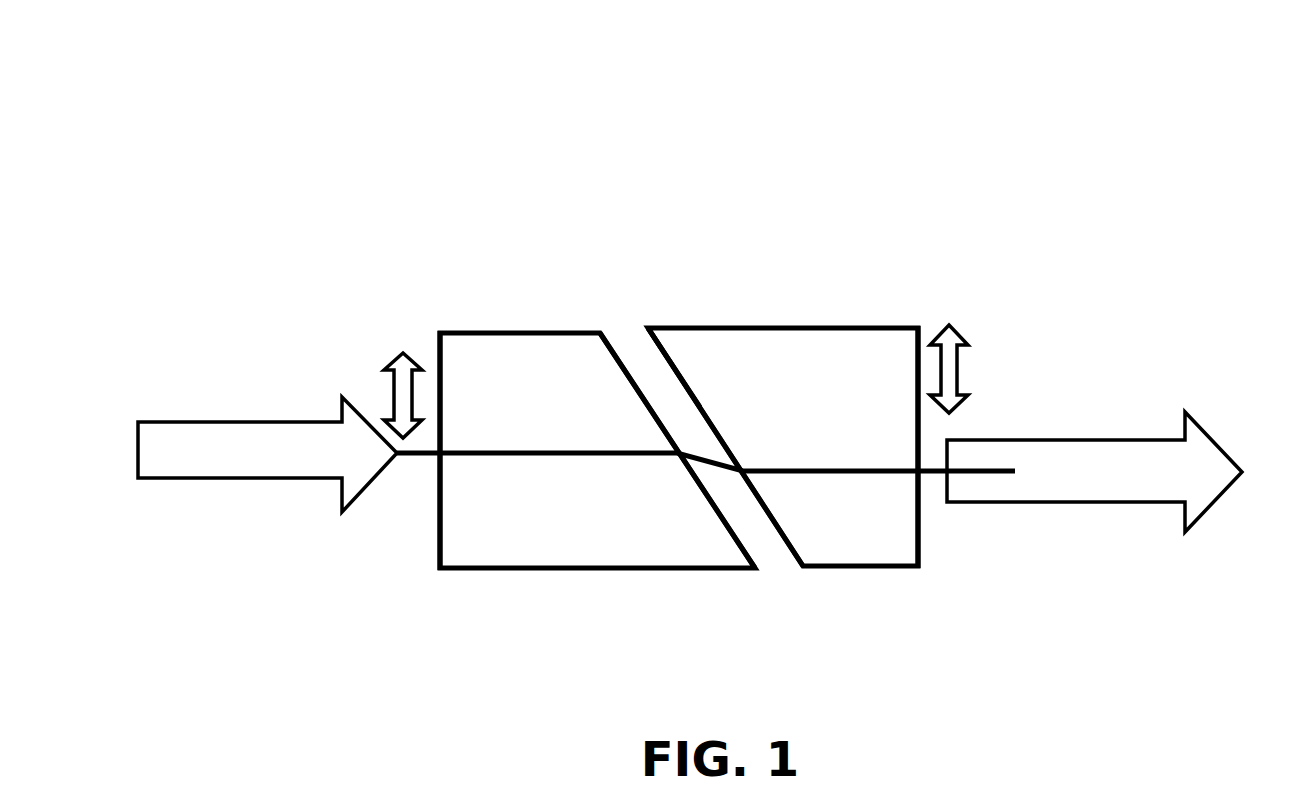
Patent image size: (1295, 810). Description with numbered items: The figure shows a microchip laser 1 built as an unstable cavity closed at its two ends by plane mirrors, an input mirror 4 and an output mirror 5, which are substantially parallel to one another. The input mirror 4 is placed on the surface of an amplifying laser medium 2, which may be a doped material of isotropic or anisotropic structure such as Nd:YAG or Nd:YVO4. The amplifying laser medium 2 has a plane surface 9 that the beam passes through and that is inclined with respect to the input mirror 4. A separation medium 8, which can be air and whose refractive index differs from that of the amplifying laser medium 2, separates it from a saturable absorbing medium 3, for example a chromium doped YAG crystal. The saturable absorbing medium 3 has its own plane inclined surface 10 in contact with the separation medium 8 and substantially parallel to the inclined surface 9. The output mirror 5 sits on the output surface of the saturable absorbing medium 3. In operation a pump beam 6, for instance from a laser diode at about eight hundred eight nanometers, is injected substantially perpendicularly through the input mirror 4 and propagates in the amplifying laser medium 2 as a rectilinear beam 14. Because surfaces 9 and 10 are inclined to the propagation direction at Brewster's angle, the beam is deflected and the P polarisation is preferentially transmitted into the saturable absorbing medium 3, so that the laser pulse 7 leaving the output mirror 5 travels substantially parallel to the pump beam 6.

The microchip laser 1 is at (398, 192).
The amplifying laser medium 2 is at (512, 412).
The saturable absorbing medium 3 is at (813, 346).
The input mirror 4 is at (424, 528).
The output mirror 5 is at (933, 518).
The pump beam 6 is at (140, 477).
The laser pulse 7 is at (1162, 437).
The separation medium 8 is at (650, 372).
The inclined surface 9 is at (725, 527).
The inclined surface 10 is at (765, 507).
The rectilinear beam 14 is at (560, 450).